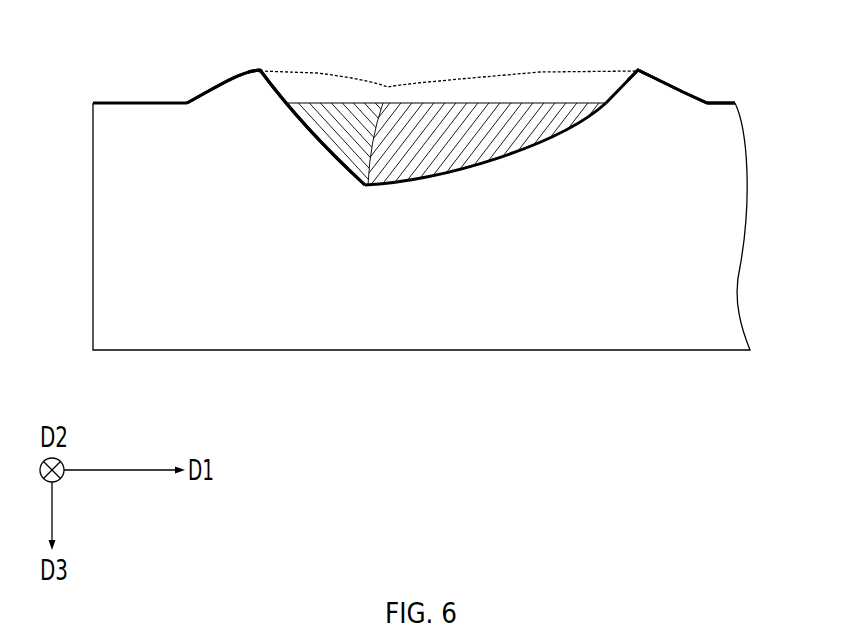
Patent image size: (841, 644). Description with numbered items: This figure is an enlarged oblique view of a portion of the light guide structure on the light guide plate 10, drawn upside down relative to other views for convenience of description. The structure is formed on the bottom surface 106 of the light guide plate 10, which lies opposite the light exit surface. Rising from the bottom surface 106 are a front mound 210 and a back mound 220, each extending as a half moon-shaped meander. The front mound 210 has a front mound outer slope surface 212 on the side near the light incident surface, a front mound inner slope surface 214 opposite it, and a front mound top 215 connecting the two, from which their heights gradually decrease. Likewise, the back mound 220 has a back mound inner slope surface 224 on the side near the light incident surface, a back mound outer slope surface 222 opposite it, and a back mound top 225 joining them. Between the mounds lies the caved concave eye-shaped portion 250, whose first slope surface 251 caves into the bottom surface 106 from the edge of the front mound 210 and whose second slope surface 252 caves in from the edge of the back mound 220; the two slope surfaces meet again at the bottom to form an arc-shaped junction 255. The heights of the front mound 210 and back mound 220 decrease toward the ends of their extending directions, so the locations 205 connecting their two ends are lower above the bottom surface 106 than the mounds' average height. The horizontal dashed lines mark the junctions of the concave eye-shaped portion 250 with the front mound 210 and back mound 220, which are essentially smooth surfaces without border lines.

The light guide plate 10 is at (588, 274).
The bottom surface 106 is at (133, 102).
The locations connecting the two ends of the front mound and the back mound 205 is at (388, 87).
The front mound 210 is at (386, 63).
The back mound 220 is at (703, 62).
The front mound outer slope surface 212 is at (212, 100).
The front mound inner slope surface 214 is at (273, 92).
The front mound top 215 is at (257, 72).
The back mound outer slope surface 222 is at (682, 90).
The back mound inner slope surface 224 is at (615, 92).
The back mound top 225 is at (638, 70).
The concave eye-shaped portion 250 is at (448, 173).
The first slope surface 251 is at (343, 150).
The second slope surface 252 is at (408, 183).
The arc-shaped junction 255 is at (370, 187).